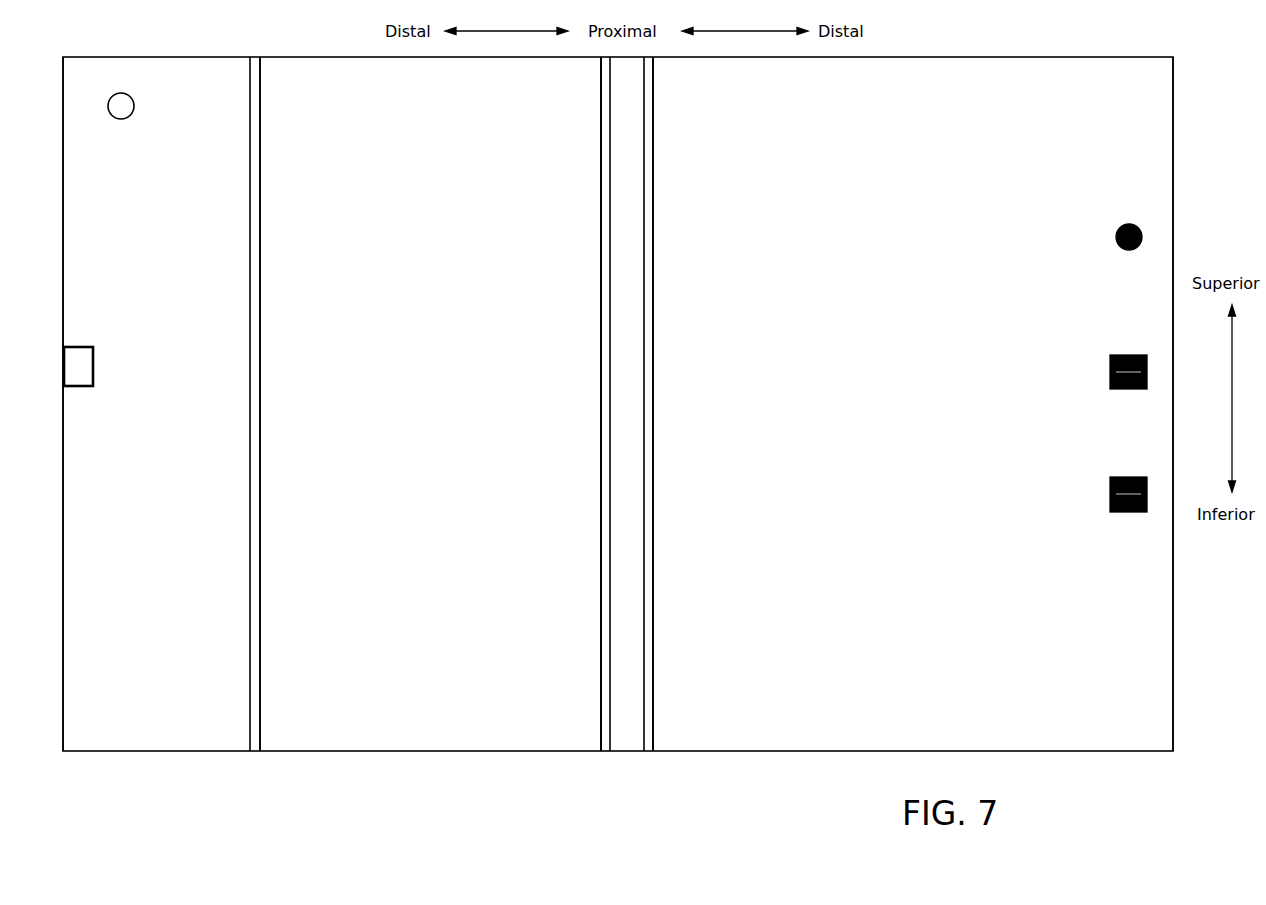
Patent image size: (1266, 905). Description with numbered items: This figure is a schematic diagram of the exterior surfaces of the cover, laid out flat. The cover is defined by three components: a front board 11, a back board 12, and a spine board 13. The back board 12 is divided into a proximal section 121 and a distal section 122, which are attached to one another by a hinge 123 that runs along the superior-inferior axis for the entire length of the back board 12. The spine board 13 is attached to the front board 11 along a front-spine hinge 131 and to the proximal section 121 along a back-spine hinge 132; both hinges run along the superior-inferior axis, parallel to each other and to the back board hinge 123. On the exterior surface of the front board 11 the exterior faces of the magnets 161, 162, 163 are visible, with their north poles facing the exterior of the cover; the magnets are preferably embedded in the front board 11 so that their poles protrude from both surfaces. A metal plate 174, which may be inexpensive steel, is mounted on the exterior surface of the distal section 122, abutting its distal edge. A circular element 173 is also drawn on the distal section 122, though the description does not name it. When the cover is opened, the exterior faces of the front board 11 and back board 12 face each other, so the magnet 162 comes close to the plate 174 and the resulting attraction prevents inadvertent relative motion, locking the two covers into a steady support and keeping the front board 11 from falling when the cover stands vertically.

The front board 11 is at (838, 413).
The back board 12 is at (332, 780).
The proximal section 121 is at (427, 420).
The distal section 122 is at (145, 420).
The hinge 123 is at (256, 753).
The spine board 13 is at (623, 753).
The front-spine hinge 131 is at (655, 689).
The back-spine hinge 132 is at (602, 753).
The magnet 161 is at (1125, 222).
The magnet 162 is at (1110, 355).
The magnet 163 is at (1110, 480).
The circular attachment element 173 is at (120, 119).
The metal plate 174 is at (78, 344).